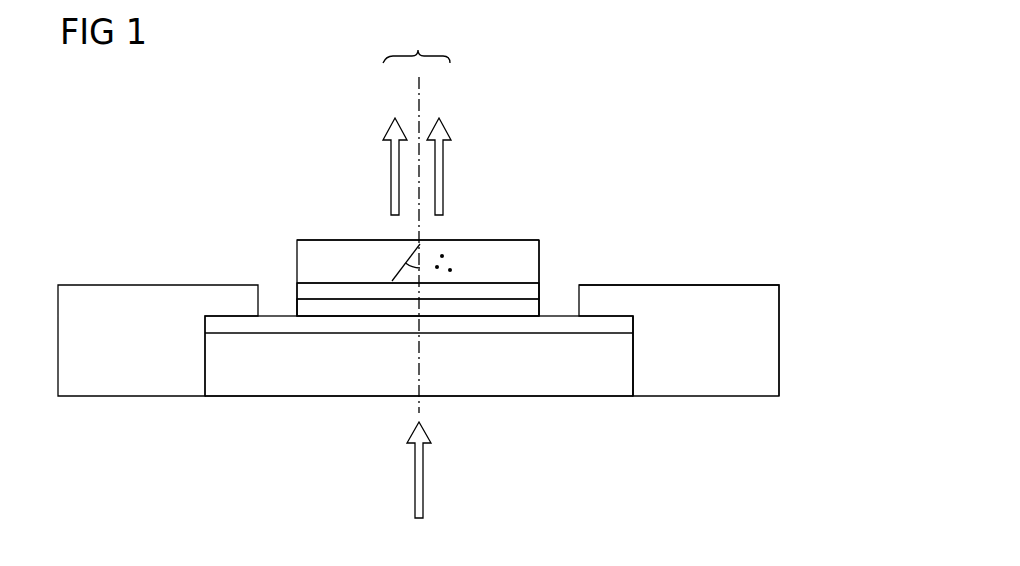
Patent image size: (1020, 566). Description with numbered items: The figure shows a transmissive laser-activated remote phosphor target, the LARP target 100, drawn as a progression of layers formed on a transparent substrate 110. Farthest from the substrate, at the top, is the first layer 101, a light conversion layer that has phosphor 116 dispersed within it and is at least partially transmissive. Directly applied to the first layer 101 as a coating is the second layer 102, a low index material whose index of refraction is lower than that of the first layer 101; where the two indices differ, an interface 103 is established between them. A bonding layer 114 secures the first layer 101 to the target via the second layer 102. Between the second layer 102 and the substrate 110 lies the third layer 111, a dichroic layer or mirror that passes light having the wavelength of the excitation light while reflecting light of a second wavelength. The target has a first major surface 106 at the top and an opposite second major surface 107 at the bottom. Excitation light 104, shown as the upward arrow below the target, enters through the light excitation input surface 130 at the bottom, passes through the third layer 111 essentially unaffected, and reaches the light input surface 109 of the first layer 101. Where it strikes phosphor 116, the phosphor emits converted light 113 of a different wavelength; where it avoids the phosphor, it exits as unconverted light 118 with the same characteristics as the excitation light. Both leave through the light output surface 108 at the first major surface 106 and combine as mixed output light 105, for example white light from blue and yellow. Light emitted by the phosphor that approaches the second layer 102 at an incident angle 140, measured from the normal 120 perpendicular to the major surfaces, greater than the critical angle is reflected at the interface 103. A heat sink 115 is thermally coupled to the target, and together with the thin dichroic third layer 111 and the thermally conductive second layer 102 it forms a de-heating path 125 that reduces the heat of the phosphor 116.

The LARP target 100 is at (713, 148).
The first layer 101 is at (307, 260).
The second layer 102 is at (535, 292).
The interface 103 is at (528, 284).
The excitation light 104 is at (414, 478).
The mixed output light 105 is at (416, 38).
The first major surface 106 is at (507, 240).
The second major surface 107 is at (500, 398).
The light output surface 108 is at (308, 240).
The light input surface 109 is at (503, 282).
The substrate 110 is at (622, 398).
The third layer 111 is at (458, 323).
The converted light 113 is at (444, 156).
The bonding layer 114 is at (307, 308).
The heat sink 115 is at (138, 387).
The phosphor 116 is at (457, 262).
The unconverted light 118 is at (390, 155).
The normal 120 is at (419, 88).
The de-heating path 125 is at (788, 283).
The light excitation input surface 130 is at (275, 398).
The incident angle 140 is at (404, 266).